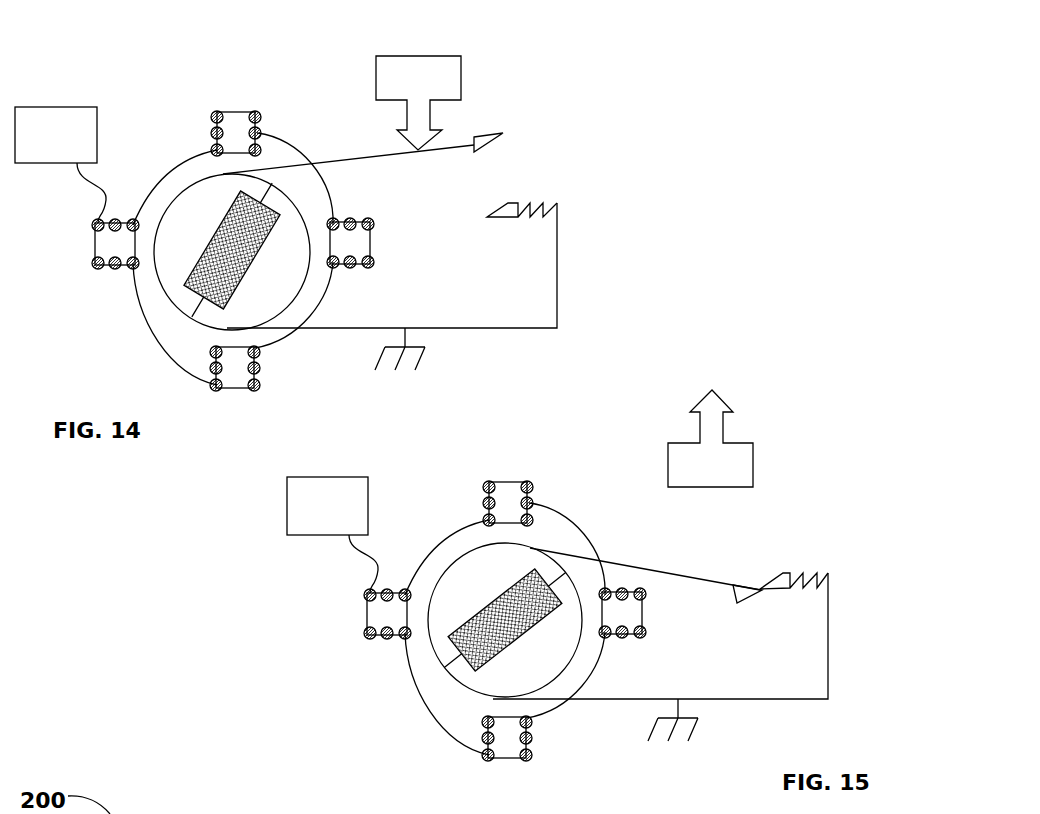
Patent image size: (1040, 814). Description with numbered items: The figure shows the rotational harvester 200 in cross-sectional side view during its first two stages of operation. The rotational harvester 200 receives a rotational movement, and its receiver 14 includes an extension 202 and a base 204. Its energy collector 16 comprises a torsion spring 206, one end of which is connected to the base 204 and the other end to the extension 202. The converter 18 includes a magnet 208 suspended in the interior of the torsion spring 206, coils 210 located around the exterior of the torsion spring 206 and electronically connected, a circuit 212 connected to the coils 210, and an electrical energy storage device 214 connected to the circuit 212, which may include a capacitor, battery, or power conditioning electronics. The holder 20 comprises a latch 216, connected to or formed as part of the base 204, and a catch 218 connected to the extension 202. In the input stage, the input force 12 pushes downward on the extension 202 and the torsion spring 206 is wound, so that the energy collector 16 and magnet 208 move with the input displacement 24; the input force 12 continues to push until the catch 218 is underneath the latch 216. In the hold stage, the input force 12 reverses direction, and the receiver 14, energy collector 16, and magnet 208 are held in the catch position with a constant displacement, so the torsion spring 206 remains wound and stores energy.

In FIG. 14, the rotational harvester 200 is at (110, 45).
In FIG. 15, the rotational harvester 200 is at (745, 357).
In FIG. 14, the input force 12 is at (387, 68).
In FIG. 15, the input force 12 is at (675, 468).
In FIG. 14, the receiver 14 is at (302, 77).
In FIG. 15, the receiver 14 is at (573, 482).
In FIG. 14, the energy collector 16 is at (140, 355).
In FIG. 15, the energy collector 16 is at (412, 725).
In FIG. 14, the converter 18 is at (147, 90).
In FIG. 15, the converter 18 is at (412, 468).
In FIG. 14, the holder 20 is at (550, 135).
In FIG. 15, the holder 20 is at (805, 495).
In FIG. 14, the input displacement 24 is at (423, 107).
In FIG. 14, the extension 202 is at (380, 155).
In FIG. 15, the extension 202 is at (668, 575).
In FIG. 14, the base 204 is at (473, 330).
In FIG. 15, the base 204 is at (743, 700).
In FIG. 14, the torsion spring 206 is at (170, 303).
In FIG. 15, the torsion spring 206 is at (444, 674).
In FIG. 14, the magnet 208 is at (212, 253).
In FIG. 15, the magnet 208 is at (482, 620).
In FIG. 14, the coils 210 is at (233, 107).
In FIG. 15, the coils 210 is at (505, 478).
In FIG. 14, the circuit 212 is at (100, 193).
In FIG. 15, the circuit 212 is at (372, 563).
In FIG. 14, the electrical energy storage device 214 is at (77, 107).
In FIG. 15, the electrical energy storage device 214 is at (348, 477).
In FIG. 14, the latch 216 is at (508, 217).
In FIG. 15, the latch 216 is at (785, 572).
In FIG. 14, the catch 218 is at (492, 146).
In FIG. 15, the catch 218 is at (733, 597).